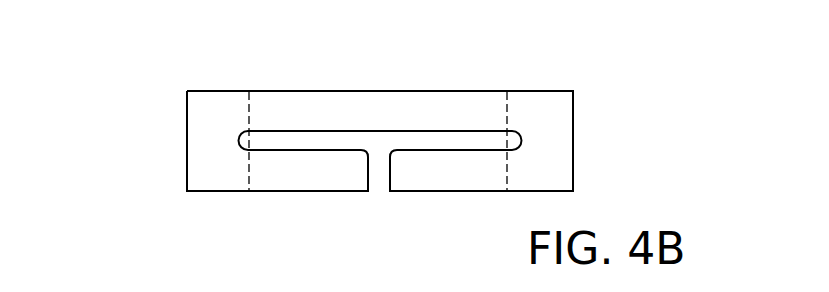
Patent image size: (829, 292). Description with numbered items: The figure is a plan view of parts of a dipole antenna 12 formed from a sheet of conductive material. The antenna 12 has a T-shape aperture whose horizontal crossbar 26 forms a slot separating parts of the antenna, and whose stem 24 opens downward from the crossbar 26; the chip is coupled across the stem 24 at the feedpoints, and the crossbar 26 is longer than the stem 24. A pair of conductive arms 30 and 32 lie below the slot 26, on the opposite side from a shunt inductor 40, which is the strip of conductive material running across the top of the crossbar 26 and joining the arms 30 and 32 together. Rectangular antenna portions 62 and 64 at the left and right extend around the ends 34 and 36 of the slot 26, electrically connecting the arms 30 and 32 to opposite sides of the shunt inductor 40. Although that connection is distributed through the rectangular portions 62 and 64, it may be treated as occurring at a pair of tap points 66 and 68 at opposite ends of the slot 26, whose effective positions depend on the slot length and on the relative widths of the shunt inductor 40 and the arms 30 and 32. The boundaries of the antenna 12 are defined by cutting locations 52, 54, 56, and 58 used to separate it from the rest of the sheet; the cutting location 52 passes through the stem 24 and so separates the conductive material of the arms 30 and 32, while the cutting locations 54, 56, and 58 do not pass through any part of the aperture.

The antenna 12 is at (153, 83).
The stem 24 is at (378, 172).
The crossbar 26 is at (319, 142).
The arm 30 is at (314, 173).
The arm 32 is at (450, 182).
The end 34 is at (245, 148).
The end 36 is at (506, 143).
The shunt inductor 40 is at (376, 108).
The cutting location 52 is at (234, 193).
The cutting location 54 is at (187, 150).
The cutting location 56 is at (212, 91).
The cutting location 58 is at (574, 137).
The rectangular antenna portion 62 is at (192, 132).
The rectangular antenna portion 64 is at (560, 110).
The tap point 66 is at (245, 129).
The tap point 68 is at (523, 130).